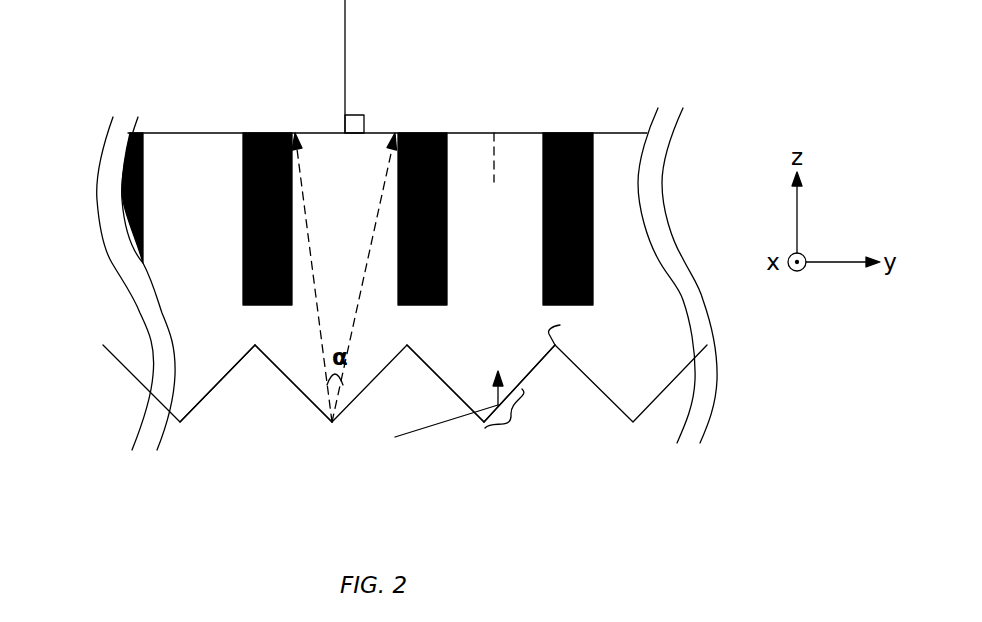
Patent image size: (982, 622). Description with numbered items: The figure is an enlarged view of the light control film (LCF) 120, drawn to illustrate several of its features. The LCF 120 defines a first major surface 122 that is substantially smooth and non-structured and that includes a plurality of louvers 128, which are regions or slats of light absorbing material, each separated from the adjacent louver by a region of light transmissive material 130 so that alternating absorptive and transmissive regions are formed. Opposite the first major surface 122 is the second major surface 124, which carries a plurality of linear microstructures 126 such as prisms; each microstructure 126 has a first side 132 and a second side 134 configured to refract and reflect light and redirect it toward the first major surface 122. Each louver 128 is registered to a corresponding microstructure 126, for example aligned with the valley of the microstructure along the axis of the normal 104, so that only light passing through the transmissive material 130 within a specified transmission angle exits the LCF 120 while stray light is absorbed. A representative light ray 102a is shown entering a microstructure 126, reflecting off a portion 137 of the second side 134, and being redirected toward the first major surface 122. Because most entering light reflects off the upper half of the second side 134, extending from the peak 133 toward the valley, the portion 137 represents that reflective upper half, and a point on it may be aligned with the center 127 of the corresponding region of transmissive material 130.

The light control film (LCF) 120 is at (140, 30).
The normal 104 is at (345, 27).
The first major surface 122 is at (535, 118).
The louvers 128 is at (242, 248).
The light transmissive material 130 is at (218, 210).
The center of the region of transmissive material 127 is at (493, 152).
The second major surface 124 is at (292, 482).
The linear microstructures 126 is at (185, 391).
The first side 132 is at (303, 397).
The representative light ray 102a is at (442, 417).
The peak 133 is at (481, 430).
The portion of the second side 137 is at (523, 408).
The second side 134 is at (540, 366).